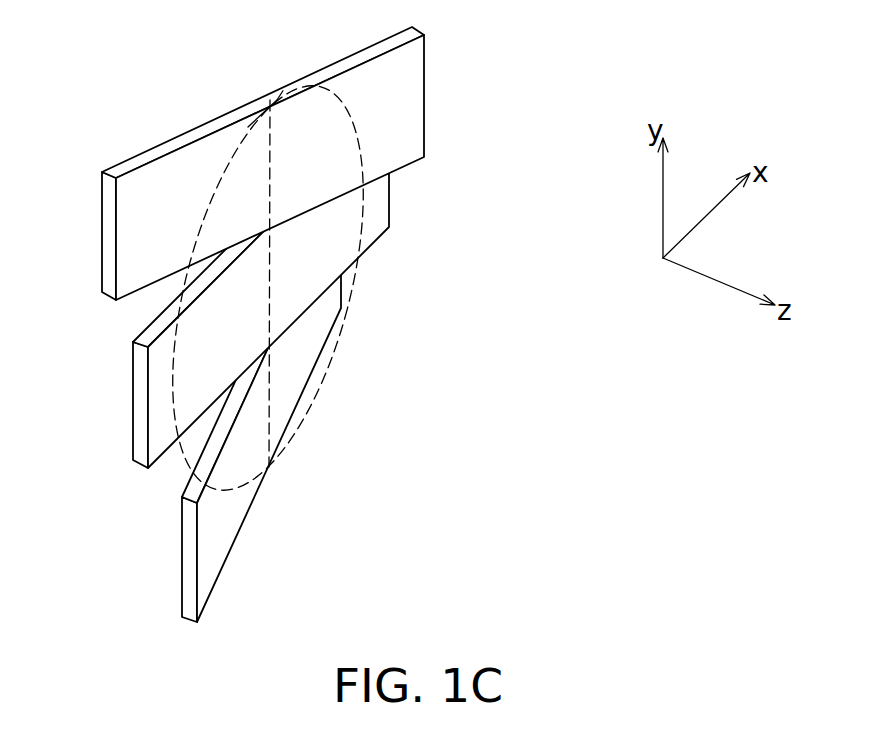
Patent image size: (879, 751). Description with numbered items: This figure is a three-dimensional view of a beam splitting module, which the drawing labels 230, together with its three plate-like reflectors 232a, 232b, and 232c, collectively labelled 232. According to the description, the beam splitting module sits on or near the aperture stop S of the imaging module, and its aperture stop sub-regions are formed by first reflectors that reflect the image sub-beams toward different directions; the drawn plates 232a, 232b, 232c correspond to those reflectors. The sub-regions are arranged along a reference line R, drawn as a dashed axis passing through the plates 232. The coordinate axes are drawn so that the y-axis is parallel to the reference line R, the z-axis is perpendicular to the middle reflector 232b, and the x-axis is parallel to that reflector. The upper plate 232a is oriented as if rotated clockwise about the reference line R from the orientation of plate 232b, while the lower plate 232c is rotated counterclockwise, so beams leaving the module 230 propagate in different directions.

The reflective module 230 is at (339, 324).
The reflective elements 232 is at (339, 324).
The first reflective element 232a is at (410, 99).
The second reflective element 232b is at (380, 207).
The third reflective element 232c is at (334, 308).
The reference line R is at (270, 141).
The aperture stop S is at (254, 128).